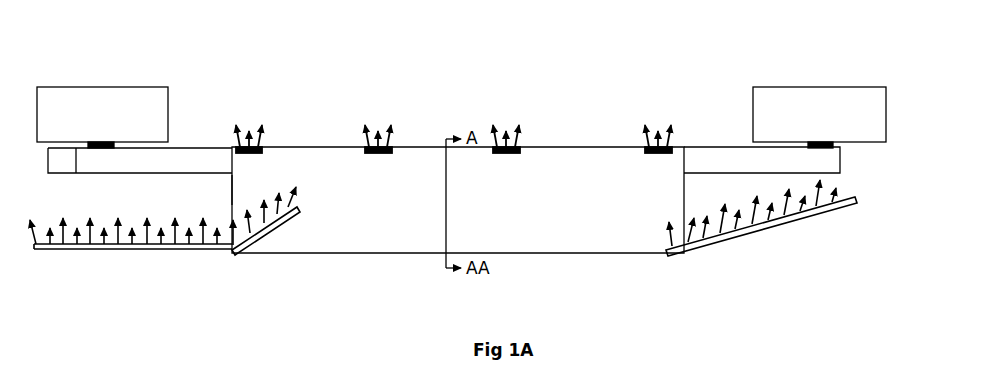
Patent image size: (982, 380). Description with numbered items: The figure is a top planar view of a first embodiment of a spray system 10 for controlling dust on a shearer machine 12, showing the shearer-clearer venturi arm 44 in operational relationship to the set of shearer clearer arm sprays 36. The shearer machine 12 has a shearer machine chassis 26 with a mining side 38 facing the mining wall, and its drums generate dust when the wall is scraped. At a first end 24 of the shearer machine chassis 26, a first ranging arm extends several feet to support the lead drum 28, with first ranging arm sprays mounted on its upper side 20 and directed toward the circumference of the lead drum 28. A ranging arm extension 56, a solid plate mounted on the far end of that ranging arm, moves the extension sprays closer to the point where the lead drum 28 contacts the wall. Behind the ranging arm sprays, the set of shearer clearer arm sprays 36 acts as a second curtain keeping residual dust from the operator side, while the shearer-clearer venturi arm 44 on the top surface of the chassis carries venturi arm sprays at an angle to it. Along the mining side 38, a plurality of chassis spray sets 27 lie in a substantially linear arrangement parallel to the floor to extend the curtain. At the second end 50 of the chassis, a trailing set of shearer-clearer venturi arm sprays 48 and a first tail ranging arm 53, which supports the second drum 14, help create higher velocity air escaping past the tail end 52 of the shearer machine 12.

The spray system 10 is at (485, 47).
The shearer machine 12 is at (593, 255).
The drum 14 is at (815, 103).
The upper side 20 is at (88, 161).
The first end 24 is at (230, 200).
The shearer machine chassis 26 is at (579, 157).
The chassis spray sets 27 is at (250, 130).
The lead drum 28 is at (103, 103).
The shearer clearer arm sprays 36 is at (84, 253).
The mining side 38 is at (316, 146).
The shearer-clearer venturi arm 44 is at (268, 233).
The trailing set of shearer-clearer venturi arm sprays 48 is at (786, 222).
The second end 50 is at (688, 200).
The tail end 52 is at (857, 183).
The first tail ranging arm 53 is at (820, 158).
The ranging arm extension 56 is at (64, 176).